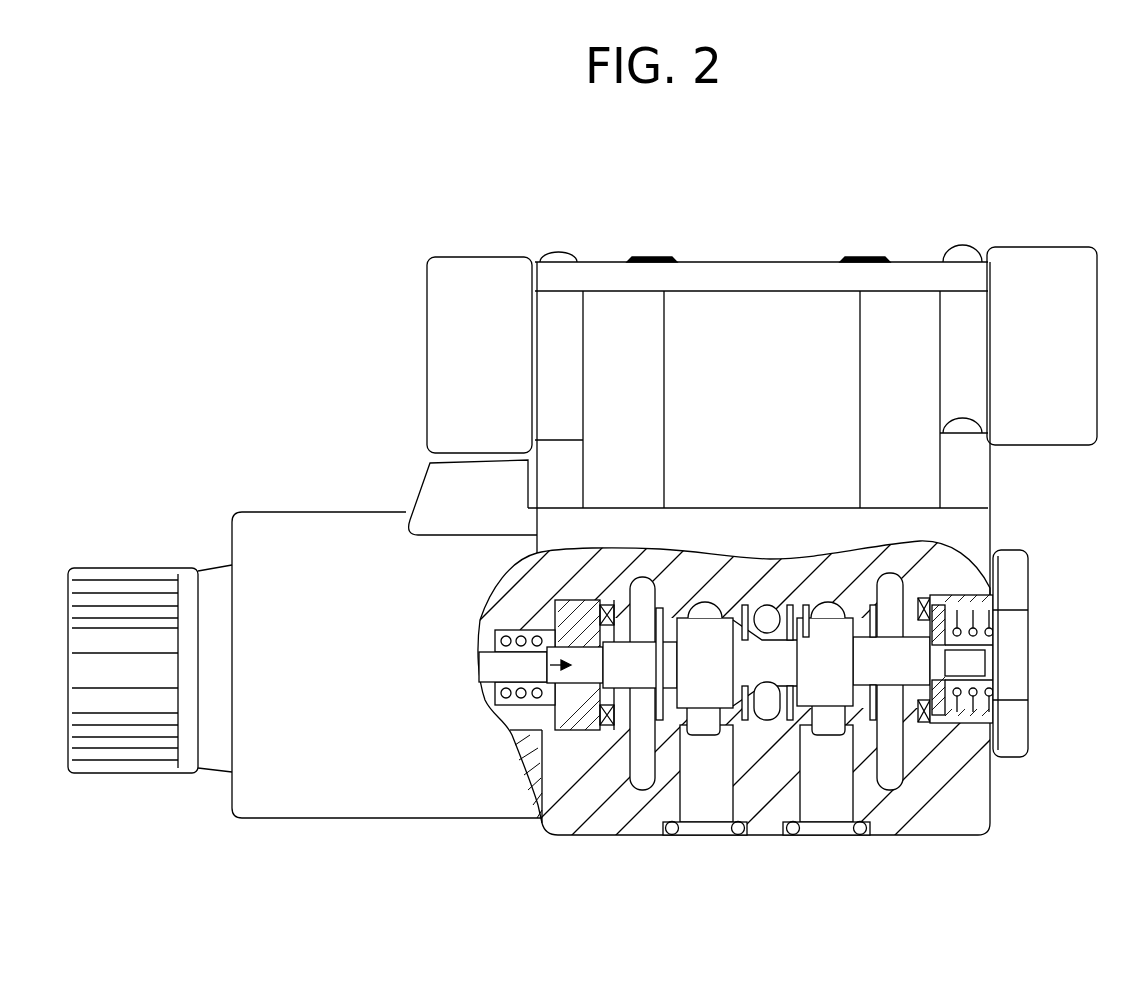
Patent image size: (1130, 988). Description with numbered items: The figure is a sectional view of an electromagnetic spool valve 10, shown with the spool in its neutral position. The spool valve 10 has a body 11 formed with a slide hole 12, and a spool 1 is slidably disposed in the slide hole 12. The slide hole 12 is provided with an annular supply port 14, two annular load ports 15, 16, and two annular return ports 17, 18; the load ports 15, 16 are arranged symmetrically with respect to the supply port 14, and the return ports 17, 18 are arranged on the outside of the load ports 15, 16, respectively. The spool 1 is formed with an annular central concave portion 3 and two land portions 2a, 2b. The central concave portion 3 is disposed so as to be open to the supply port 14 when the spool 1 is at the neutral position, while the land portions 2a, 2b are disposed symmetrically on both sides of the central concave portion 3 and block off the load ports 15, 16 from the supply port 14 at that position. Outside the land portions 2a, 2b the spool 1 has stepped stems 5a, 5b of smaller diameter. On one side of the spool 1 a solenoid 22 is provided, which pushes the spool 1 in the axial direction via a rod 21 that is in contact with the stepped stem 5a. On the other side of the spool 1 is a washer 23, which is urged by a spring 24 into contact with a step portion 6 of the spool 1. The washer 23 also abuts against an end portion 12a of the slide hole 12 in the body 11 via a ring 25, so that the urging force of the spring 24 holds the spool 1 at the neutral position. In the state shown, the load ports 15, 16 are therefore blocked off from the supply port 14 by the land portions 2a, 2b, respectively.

The spool valve 10 is at (372, 415).
The solenoid 22 is at (287, 530).
The body 11 is at (985, 790).
The spool 1 is at (548, 658).
The rod 21 is at (490, 668).
The stepped stem 5a is at (547, 695).
The stepped stem 5b is at (975, 655).
The land portion 2a is at (707, 615).
The land portion 2b is at (827, 615).
The central concave portion 3 is at (768, 622).
The supply port 14 is at (762, 722).
The load port 16 is at (828, 735).
The load port 15 is at (705, 700).
The return port 17 is at (645, 762).
The return port 18 is at (890, 775).
The slide hole 12 is at (722, 745).
The end portion 12a is at (921, 727).
The ring 25 is at (921, 598).
The step portion 6 is at (985, 665).
The spring 24 is at (990, 680).
The washer 23 is at (1000, 560).